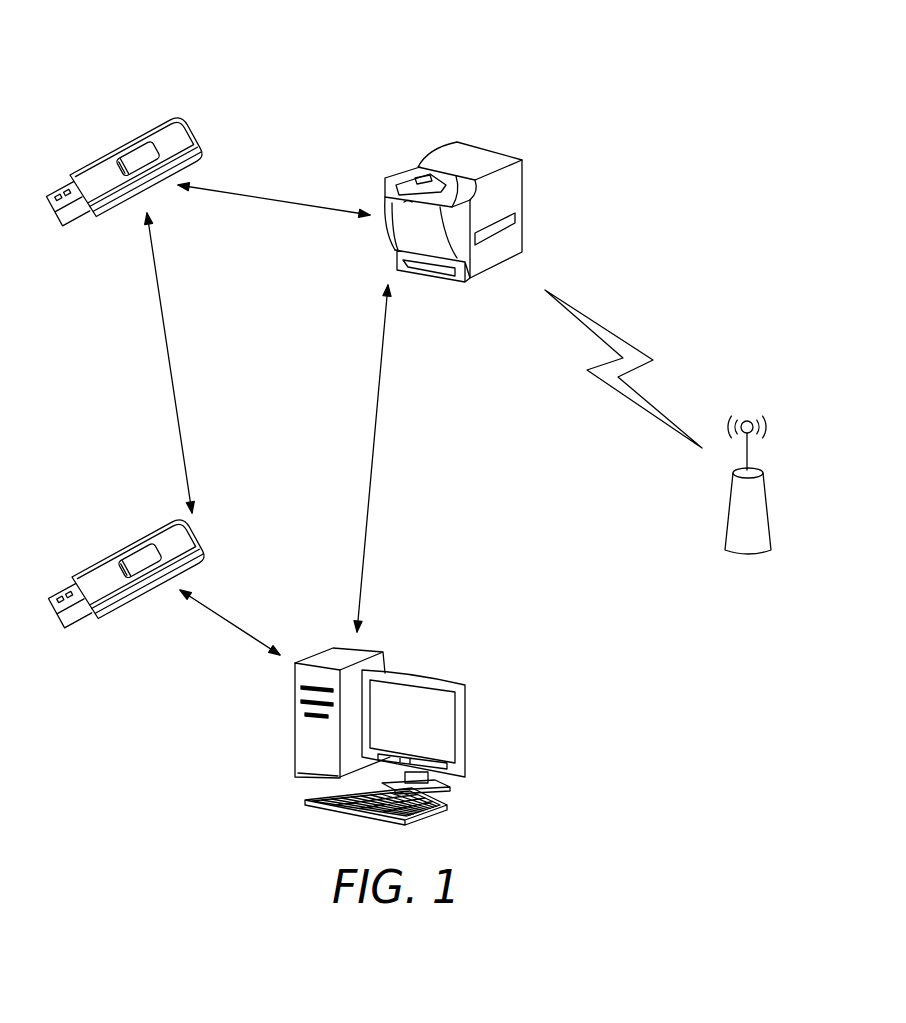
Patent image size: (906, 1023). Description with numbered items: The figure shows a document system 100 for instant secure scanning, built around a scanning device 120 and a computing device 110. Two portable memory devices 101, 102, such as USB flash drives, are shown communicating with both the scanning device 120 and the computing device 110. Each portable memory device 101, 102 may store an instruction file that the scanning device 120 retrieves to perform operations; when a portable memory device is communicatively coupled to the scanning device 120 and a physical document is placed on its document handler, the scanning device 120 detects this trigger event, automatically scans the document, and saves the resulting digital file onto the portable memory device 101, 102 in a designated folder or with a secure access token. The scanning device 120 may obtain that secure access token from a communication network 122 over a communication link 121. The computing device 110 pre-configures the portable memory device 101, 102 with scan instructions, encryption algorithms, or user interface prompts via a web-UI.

The document system 100 is at (260, 49).
The portable memory device 101 is at (142, 538).
The portable memory device 102 is at (145, 135).
The computing device 110 is at (437, 677).
The scanning device 120 is at (504, 148).
The communication link 121 is at (632, 344).
The communication network 122 is at (725, 510).